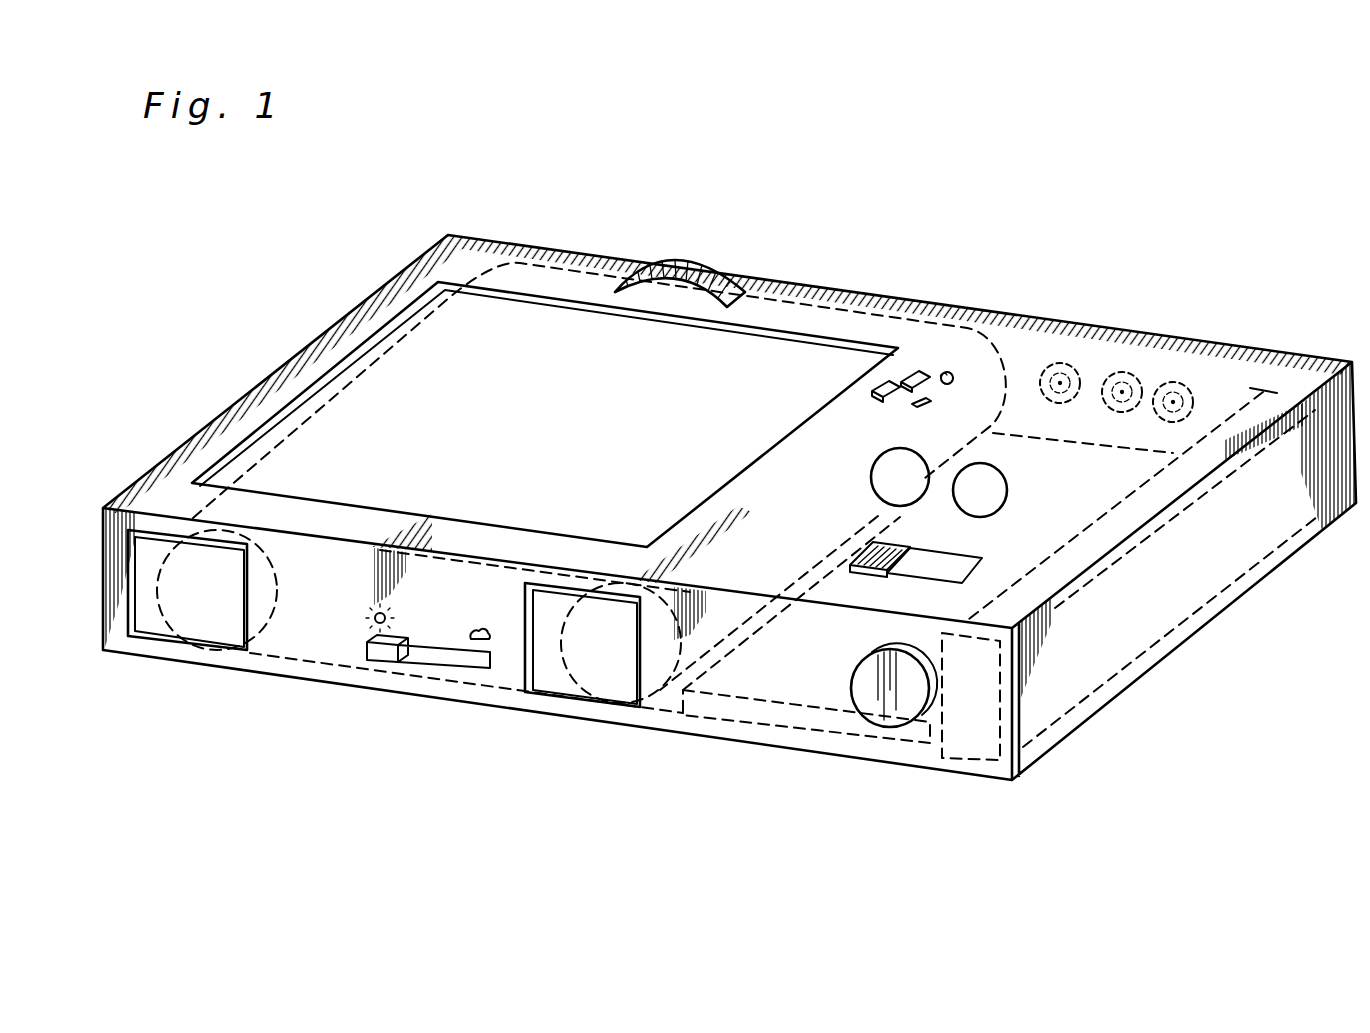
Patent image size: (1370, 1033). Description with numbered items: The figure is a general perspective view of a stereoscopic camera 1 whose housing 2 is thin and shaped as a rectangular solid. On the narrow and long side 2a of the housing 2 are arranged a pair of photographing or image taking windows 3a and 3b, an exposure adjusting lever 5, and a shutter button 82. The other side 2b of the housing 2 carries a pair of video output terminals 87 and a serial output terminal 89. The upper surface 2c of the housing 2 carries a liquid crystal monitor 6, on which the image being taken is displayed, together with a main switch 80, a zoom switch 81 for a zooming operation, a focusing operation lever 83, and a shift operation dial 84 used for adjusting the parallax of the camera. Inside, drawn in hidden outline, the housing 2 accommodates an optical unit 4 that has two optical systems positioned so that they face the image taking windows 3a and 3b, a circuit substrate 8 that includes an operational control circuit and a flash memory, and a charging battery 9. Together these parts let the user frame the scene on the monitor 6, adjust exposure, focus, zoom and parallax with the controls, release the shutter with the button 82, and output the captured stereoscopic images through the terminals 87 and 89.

The stereoscopic camera 1 is at (1176, 189).
The housing 2 is at (276, 372).
The narrow and long side 2a is at (483, 690).
The other side 2b is at (1238, 375).
The upper surface 2c is at (866, 307).
The image taking window 3a is at (148, 622).
The image taking window 3b is at (553, 680).
The optical unit 4 is at (293, 630).
The exposure adjusting lever 5 is at (378, 660).
The liquid crystal monitor 6 is at (540, 328).
The circuit substrate 8 is at (750, 707).
The charging battery 9 is at (978, 740).
The main switch 80 is at (847, 542).
The zoom switch 81 is at (963, 508).
The shutter button 82 is at (890, 705).
The focusing operation lever 83 is at (873, 400).
The shift operation dial 84 is at (700, 262).
The video output terminals 87 is at (1175, 382).
The serial output terminal 89 is at (1076, 364).